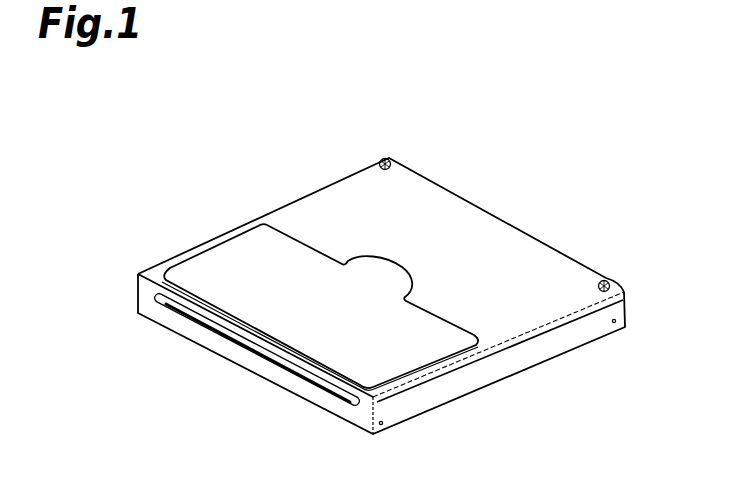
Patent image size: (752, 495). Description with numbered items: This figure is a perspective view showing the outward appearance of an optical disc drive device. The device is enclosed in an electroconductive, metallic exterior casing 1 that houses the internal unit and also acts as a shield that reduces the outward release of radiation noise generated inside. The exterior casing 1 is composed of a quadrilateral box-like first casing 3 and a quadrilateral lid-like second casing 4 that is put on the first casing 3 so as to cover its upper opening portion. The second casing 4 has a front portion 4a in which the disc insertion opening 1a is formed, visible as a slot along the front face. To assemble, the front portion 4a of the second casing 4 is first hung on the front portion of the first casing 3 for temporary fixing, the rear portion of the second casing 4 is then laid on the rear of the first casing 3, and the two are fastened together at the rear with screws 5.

The exterior casing 1 is at (282, 205).
The disc insertion opening 1a is at (250, 347).
The first casing 3 is at (490, 375).
The second casing 4 is at (203, 260).
The front portion 4a is at (342, 409).
The screws 5 is at (380, 157).